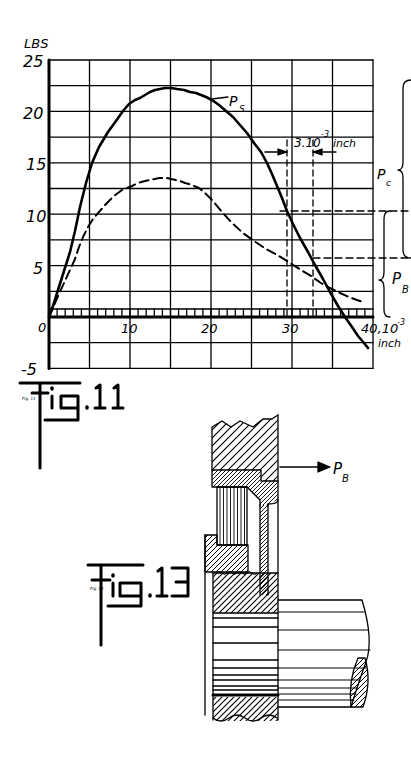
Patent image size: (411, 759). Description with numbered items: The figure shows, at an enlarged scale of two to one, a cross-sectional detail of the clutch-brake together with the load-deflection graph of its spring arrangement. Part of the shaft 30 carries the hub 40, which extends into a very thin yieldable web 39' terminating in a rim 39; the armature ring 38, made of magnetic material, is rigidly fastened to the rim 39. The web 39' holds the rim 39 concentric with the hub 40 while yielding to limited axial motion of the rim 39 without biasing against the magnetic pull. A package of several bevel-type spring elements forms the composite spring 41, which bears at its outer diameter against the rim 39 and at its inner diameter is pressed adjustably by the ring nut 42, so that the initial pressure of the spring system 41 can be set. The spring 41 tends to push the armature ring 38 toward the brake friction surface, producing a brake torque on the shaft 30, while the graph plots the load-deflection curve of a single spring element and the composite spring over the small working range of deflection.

The armature ring 38 is at (272, 437).
The rim 39 is at (219, 480).
The yieldable web 39' is at (292, 545).
The hub 40 is at (267, 590).
The bevel type spring 41 is at (230, 512).
The adjustment nut 42 is at (208, 547).
The shaft 30 is at (318, 617).